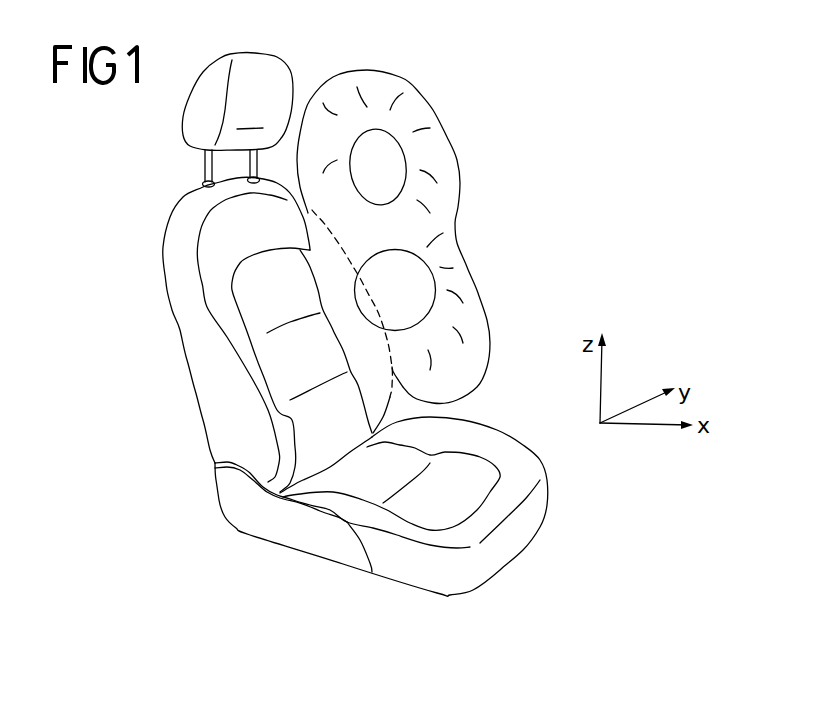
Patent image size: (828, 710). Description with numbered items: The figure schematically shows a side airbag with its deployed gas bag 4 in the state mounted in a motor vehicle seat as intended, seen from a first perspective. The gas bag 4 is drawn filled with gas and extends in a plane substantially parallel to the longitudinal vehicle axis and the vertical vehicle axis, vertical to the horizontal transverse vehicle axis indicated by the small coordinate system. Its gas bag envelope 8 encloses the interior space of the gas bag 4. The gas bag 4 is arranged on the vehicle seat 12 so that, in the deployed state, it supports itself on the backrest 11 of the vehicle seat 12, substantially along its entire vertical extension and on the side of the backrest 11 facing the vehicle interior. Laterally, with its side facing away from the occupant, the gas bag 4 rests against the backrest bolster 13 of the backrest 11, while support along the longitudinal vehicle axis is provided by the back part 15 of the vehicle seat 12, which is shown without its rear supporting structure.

The gas bag 4 is at (362, 58).
The gas bag envelope 8 is at (443, 117).
The backrest 11 is at (148, 252).
The vehicle seat 12 is at (447, 605).
The backrest bolster 13 is at (188, 325).
The back part 15 is at (283, 360).